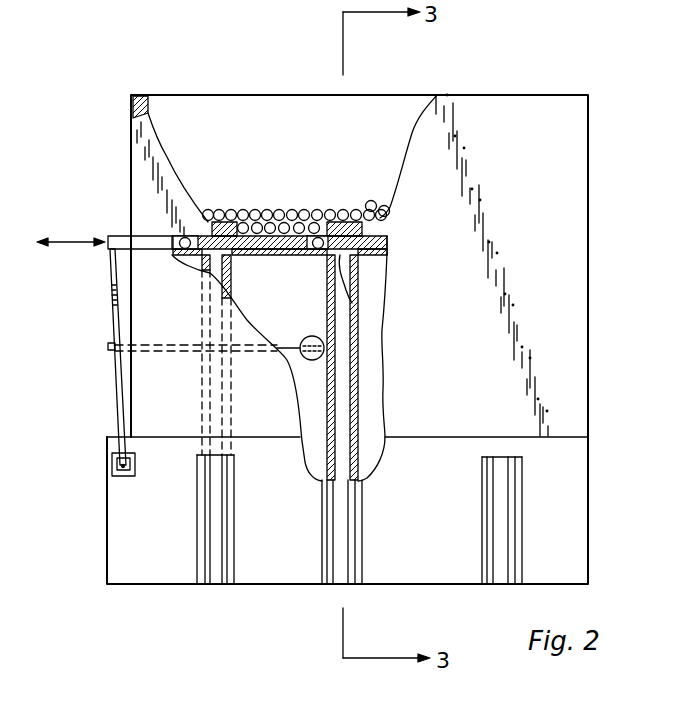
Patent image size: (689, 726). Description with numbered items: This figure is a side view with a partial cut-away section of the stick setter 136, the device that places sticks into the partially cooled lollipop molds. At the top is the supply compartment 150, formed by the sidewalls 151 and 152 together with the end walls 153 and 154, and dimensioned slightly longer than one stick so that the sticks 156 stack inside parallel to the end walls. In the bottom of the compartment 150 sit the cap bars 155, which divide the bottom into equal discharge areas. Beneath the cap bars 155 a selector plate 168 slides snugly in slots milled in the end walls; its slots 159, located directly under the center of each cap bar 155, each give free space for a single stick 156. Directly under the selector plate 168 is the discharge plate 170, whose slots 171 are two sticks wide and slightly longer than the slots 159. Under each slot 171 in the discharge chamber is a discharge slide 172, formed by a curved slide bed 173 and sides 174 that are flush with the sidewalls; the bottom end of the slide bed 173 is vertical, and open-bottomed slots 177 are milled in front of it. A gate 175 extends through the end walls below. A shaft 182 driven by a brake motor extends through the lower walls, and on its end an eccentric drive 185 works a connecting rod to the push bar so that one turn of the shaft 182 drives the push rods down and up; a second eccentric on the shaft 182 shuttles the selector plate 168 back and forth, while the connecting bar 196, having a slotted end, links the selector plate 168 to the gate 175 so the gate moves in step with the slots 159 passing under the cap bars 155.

The stick setter 136 is at (501, 382).
The compartment 150 is at (318, 150).
The sidewall 151 is at (402, 130).
The sidewall 152 is at (531, 151).
The end wall 153 is at (588, 167).
The end wall 154 is at (131, 167).
The cap bar 155 is at (217, 213).
The stick 156 is at (281, 216).
The slot 159 is at (312, 254).
The selector plate 168 is at (272, 253).
The discharge plate 170 is at (378, 254).
The slot 171 is at (357, 304).
The discharge slide 172 is at (357, 377).
The slide bed 173 is at (338, 484).
The side 174 is at (327, 393).
The gate 175 is at (107, 524).
The slot 177 is at (197, 536).
The shaft 182 is at (182, 353).
The eccentric drive 185 is at (312, 336).
The connecting bar 196 is at (112, 400).